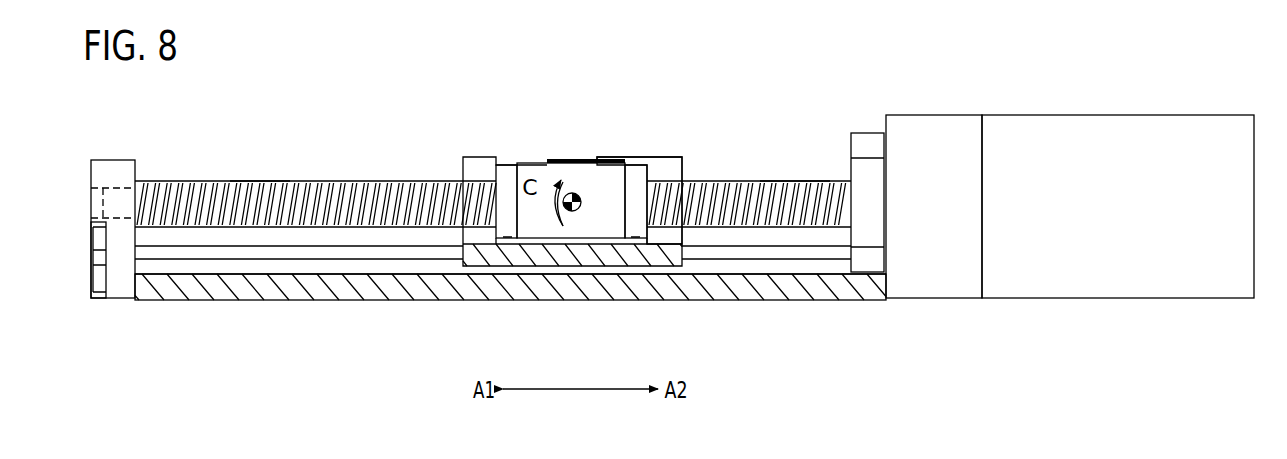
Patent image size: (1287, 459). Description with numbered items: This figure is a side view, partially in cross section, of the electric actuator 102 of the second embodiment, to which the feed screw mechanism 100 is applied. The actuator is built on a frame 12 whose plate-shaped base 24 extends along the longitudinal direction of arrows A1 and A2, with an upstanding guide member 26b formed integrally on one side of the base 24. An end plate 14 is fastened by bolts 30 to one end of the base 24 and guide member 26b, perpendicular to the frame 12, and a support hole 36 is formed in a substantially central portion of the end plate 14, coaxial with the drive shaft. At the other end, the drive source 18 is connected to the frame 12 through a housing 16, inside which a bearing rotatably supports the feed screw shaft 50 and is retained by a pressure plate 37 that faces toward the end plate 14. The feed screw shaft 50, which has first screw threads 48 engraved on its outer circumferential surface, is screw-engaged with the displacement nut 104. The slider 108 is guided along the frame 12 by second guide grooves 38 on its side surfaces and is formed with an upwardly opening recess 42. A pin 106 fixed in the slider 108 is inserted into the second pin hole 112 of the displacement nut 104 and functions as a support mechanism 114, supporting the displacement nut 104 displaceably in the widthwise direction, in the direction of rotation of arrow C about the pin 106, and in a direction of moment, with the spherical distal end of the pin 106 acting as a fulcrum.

The frame 12 is at (819, 303).
The end plate 14 is at (102, 167).
The housing 16 is at (967, 118).
The drive source 18 is at (1118, 114).
The base 24 is at (266, 283).
The guide member 26b is at (313, 237).
The bolts 30 is at (97, 277).
The support hole 36 is at (90, 198).
The pressure plate 37 is at (870, 229).
The second guide grooves 38 is at (188, 256).
The recess 42 is at (483, 166).
The first screw threads 48 is at (194, 190).
The feed screw shaft 50 is at (251, 180).
The feed screw mechanism 100 is at (789, 179).
The electric actuator 102 is at (901, 65).
The displacement nut 104 is at (602, 227).
The pin 106 is at (572, 192).
The slider 108 is at (671, 167).
The second pin hole 112 is at (572, 212).
The support mechanism 114 is at (583, 192).